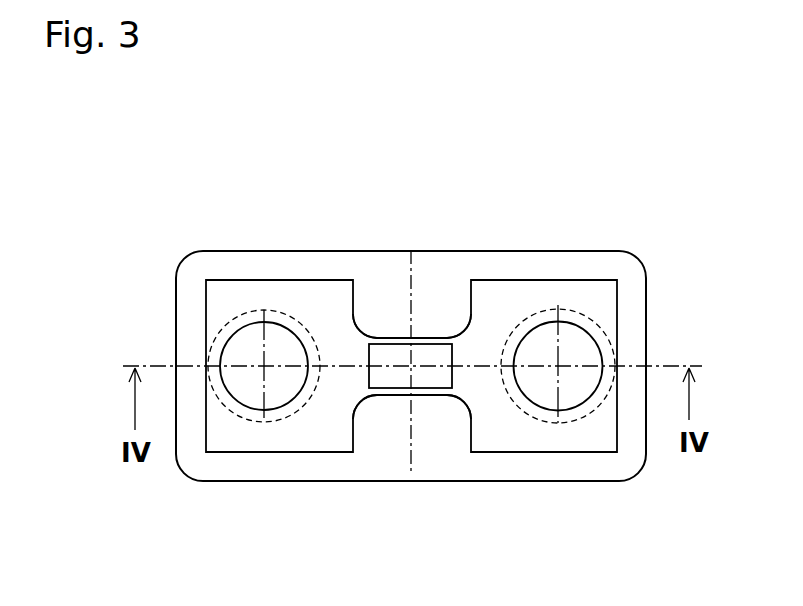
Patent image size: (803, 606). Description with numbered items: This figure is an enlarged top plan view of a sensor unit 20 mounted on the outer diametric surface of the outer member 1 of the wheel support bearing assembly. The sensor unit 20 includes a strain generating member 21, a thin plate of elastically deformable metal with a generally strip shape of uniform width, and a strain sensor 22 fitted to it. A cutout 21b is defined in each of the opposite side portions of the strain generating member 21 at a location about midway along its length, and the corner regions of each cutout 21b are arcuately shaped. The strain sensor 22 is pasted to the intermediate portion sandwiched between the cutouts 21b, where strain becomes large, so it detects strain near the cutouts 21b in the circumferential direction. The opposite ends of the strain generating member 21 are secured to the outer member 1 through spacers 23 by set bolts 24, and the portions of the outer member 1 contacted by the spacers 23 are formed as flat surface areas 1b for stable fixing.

The outer member 1 is at (725, 209).
The flat surface area 1b is at (383, 287).
The sensor unit 20 is at (342, 260).
The strain generating member 21 is at (500, 305).
The cutout 21b is at (433, 335).
The strain sensor 22 is at (395, 380).
The spacer 23 is at (238, 316).
The set bolt 24 is at (591, 353).